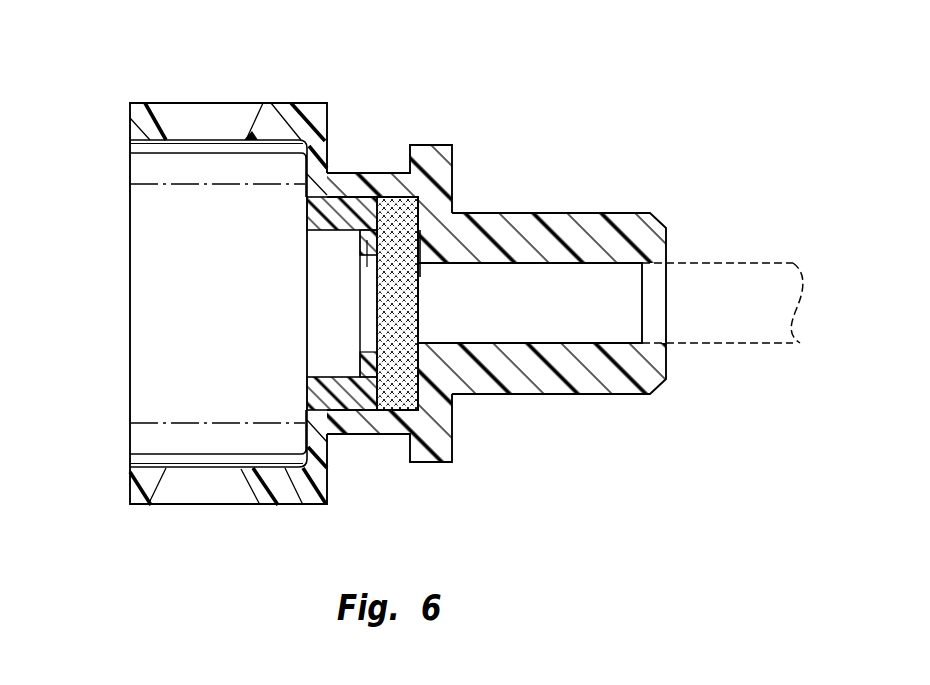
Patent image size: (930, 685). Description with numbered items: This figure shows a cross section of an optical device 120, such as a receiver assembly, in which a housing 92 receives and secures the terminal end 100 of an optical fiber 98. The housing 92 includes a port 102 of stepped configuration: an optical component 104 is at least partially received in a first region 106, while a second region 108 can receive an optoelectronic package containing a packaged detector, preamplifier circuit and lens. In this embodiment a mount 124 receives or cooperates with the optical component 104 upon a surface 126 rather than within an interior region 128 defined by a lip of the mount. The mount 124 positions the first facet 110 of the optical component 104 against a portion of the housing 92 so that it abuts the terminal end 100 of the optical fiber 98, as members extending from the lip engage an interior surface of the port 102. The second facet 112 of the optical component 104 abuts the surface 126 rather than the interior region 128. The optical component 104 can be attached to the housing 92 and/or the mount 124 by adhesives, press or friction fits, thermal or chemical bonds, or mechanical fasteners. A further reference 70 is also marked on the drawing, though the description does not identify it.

The coupling assembly 70 is at (305, 103).
The housing 92 is at (433, 165).
The optical fiber 98 is at (741, 318).
The terminal end 100 is at (580, 213).
The port 102 is at (160, 202).
The optical component 104 is at (455, 395).
The first region 106 is at (316, 363).
The second region 108 is at (142, 390).
The first facet 110 is at (420, 277).
The second facet 112 is at (377, 317).
The optical device 120 is at (363, 198).
The mount 124 is at (350, 400).
The surface 126 is at (400, 200).
The interior region 128 is at (312, 272).